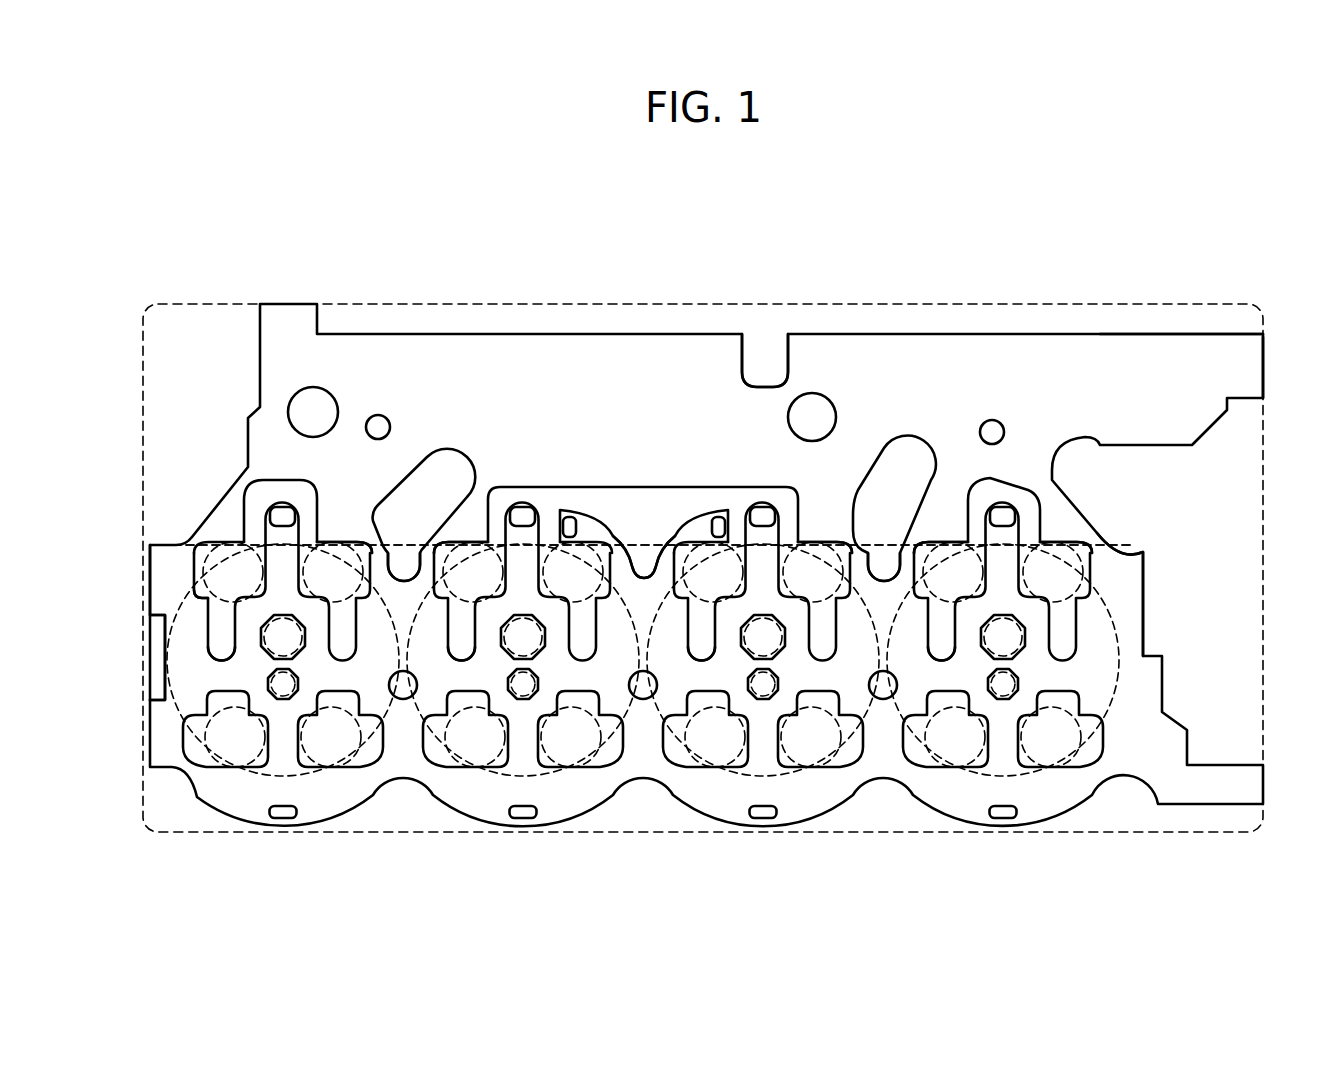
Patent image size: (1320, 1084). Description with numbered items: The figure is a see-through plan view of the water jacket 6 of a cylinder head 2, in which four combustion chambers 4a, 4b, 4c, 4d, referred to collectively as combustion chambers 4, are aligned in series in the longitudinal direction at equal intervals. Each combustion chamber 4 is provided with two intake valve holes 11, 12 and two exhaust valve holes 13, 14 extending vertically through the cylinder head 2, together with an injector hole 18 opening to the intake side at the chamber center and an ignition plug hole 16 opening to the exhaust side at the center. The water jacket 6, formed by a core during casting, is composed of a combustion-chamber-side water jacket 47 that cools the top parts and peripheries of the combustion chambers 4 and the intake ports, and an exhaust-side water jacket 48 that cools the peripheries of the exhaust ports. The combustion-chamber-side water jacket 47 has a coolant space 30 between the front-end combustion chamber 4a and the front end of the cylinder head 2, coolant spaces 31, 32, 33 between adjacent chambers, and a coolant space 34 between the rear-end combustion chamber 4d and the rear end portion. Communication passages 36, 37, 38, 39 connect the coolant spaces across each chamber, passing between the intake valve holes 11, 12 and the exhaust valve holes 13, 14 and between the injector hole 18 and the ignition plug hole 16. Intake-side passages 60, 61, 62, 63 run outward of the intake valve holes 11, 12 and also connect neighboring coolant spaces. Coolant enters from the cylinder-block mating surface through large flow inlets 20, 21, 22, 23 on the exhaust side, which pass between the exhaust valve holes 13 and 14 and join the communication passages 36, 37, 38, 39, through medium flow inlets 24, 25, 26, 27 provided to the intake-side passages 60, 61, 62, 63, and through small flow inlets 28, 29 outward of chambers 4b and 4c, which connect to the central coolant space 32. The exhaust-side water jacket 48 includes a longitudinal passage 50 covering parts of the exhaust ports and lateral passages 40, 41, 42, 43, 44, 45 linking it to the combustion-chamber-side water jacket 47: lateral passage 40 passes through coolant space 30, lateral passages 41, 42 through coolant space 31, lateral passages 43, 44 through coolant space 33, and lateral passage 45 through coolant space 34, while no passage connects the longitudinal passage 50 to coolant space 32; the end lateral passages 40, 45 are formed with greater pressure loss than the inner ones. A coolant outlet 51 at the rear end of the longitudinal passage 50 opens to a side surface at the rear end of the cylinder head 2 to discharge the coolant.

The cylinder head 2 is at (1248, 305).
The combustion chambers 4 is at (643, 502).
The combustion chamber 4a is at (333, 545).
The combustion chamber 4b is at (608, 560).
The combustion chamber 4c is at (688, 560).
The combustion chamber 4d is at (978, 560).
The water jacket 6 is at (1165, 334).
The intake valve hole 11 is at (948, 735).
The intake valve hole 12 is at (1058, 737).
The exhaust valve hole 13 is at (945, 592).
The exhaust valve hole 14 is at (1068, 592).
The ignition plug hole 16 is at (987, 655).
The injector hole 18 is at (1006, 686).
The large flow inlet 20 is at (277, 507).
The large flow inlet 21 is at (520, 507).
The large flow inlet 22 is at (765, 507).
The large flow inlet 23 is at (1005, 507).
The medium flow inlet 24 is at (283, 818).
The medium flow inlet 25 is at (523, 818).
The medium flow inlet 26 is at (763, 818).
The medium flow inlet 27 is at (1003, 818).
The small flow inlet 28 is at (569, 517).
The small flow inlet 29 is at (720, 517).
The coolant space 30 is at (176, 650).
The coolant space 31 is at (408, 575).
The coolant space 32 is at (628, 655).
The coolant space 33 is at (872, 575).
The coolant space 34 is at (1115, 620).
The communication passage 36 is at (247, 650).
The communication passage 37 is at (488, 660).
The communication passage 38 is at (800, 660).
The communication passage 39 is at (1042, 650).
The lateral passage 40 is at (222, 620).
The lateral passage 41 is at (362, 545).
The lateral passage 42 is at (455, 535).
The lateral passage 43 is at (845, 535).
The lateral passage 44 is at (930, 540).
The lateral passage 45 is at (1075, 545).
The combustion-chamber-side water jacket 47 is at (126, 533).
The exhaust-side water jacket 48 is at (126, 305).
The longitudinal passage 50 is at (654, 370).
The coolant outlet 51 is at (1263, 360).
The intake-side passage 60 is at (235, 792).
The intake-side passage 61 is at (475, 792).
The intake-side passage 62 is at (715, 792).
The intake-side passage 63 is at (955, 792).